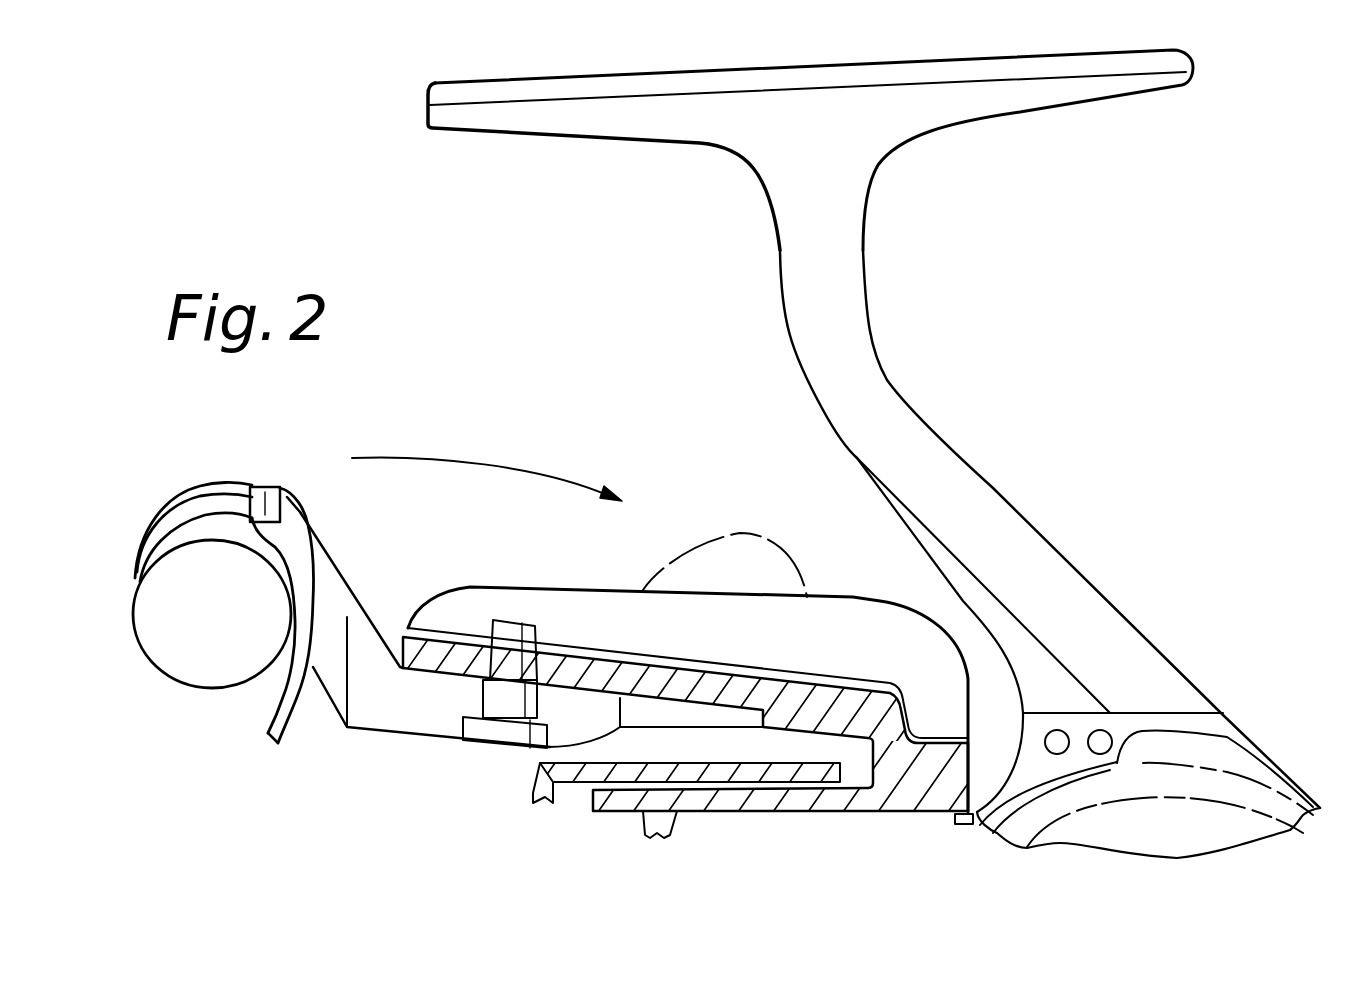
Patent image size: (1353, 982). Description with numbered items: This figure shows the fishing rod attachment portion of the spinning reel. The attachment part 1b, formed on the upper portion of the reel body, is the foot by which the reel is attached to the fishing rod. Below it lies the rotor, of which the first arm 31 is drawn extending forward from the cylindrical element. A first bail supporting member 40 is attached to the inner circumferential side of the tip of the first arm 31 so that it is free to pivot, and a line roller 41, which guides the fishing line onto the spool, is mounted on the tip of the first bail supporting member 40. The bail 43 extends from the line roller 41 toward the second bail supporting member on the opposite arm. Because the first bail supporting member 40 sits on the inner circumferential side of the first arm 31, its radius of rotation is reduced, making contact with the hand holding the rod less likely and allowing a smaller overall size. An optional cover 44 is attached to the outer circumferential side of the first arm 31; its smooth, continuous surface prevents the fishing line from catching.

The attachment part 1b is at (865, 276).
The first arm 31 is at (423, 650).
The first bail supporting member 40 is at (392, 703).
The line roller 41 is at (180, 653).
The bail 43 is at (295, 742).
The cover 44 is at (677, 622).